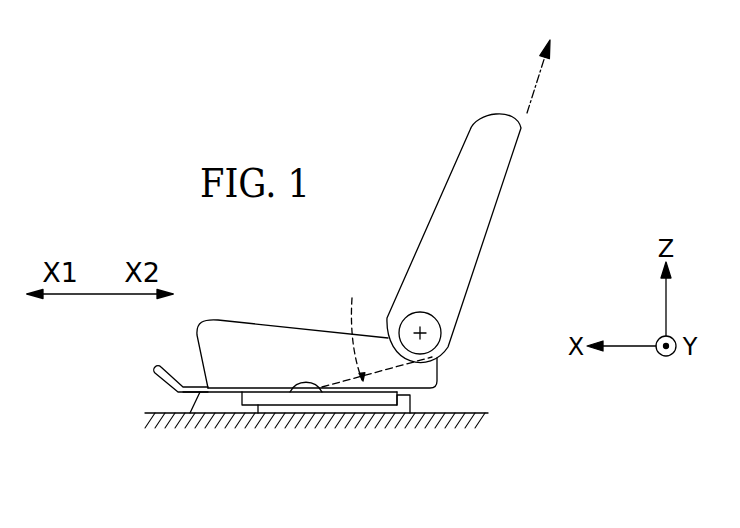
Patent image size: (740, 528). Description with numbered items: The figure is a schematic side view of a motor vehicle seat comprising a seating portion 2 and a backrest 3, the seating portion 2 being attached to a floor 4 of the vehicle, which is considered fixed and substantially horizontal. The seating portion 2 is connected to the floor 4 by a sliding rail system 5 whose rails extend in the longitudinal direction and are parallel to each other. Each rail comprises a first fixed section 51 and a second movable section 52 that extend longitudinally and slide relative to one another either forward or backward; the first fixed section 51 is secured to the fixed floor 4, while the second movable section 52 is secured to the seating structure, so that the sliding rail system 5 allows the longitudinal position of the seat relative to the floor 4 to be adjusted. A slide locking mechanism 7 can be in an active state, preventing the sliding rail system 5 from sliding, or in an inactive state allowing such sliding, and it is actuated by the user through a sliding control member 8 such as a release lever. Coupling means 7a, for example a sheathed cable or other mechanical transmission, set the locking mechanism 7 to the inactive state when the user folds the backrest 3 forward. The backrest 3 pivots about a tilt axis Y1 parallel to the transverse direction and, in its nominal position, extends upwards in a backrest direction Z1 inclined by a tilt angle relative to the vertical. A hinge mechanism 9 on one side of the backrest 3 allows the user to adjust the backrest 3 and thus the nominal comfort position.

The seating portion 2 is at (272, 340).
The backrest 3 is at (442, 197).
The floor 4 is at (169, 412).
The sliding rail system 5 is at (346, 433).
The first fixed section 51 is at (340, 410).
The second movable section 52 is at (383, 395).
The slide locking mechanism 7 is at (308, 391).
The coupling means 7a is at (355, 326).
The sliding control member 8 is at (190, 413).
The hinge mechanism 9 is at (431, 314).
The tilt axis Y1 is at (421, 333).
The backrest direction Z1 is at (559, 76).